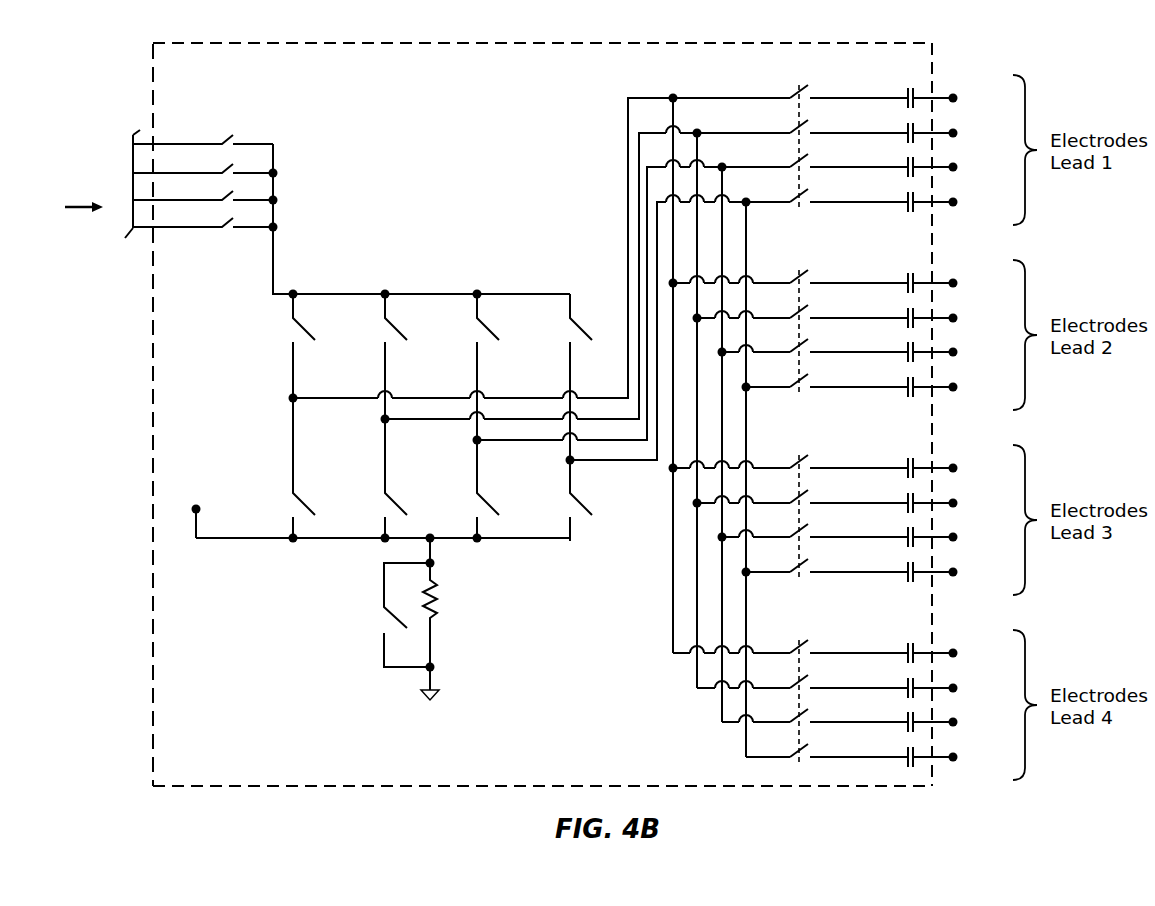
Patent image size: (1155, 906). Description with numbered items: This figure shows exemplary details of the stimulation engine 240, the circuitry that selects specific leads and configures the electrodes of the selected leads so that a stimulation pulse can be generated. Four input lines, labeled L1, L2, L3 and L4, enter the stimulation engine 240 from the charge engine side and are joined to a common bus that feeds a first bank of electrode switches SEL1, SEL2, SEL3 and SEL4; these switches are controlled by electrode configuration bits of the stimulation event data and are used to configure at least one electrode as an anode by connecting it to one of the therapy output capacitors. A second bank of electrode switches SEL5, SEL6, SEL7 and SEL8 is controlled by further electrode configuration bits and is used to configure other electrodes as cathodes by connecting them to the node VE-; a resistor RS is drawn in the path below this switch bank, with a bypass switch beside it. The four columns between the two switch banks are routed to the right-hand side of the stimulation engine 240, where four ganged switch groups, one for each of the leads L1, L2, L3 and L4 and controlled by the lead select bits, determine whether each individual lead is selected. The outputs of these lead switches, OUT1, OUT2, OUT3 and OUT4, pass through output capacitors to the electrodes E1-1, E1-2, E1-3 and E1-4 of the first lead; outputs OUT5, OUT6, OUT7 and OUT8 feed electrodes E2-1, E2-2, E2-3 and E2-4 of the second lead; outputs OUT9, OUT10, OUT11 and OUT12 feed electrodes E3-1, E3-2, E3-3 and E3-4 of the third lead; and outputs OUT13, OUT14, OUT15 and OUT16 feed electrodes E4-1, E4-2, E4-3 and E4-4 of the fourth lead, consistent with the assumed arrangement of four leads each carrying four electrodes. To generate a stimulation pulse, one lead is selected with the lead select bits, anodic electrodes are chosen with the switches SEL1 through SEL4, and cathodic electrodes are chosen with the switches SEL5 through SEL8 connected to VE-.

The stimulation engine 240 is at (499, 414).
The sense resistor RS is at (447, 614).
The VE- node VE- is at (193, 510).
The lead L1 is at (471, 131).
The lead L2 is at (471, 273).
The lead L3 is at (471, 379).
The lead L4 is at (471, 485).
The electrode switch SEL1 is at (276, 330).
The electrode switch SEL2 is at (368, 330).
The electrode switch SEL3 is at (461, 330).
The electrode switch SEL4 is at (553, 330).
The electrode switch SEL5 is at (276, 505).
The electrode switch SEL6 is at (368, 505).
The electrode switch SEL7 is at (461, 505).
The electrode switch SEL8 is at (553, 505).
The output 1 OUT1 is at (871, 92).
The output 2 OUT2 is at (871, 127).
The output 3 OUT3 is at (871, 161).
The output 4 OUT4 is at (871, 196).
The output 5 OUT5 is at (871, 277).
The output 6 OUT6 is at (871, 312).
The output 7 OUT7 is at (871, 346).
The output 8 OUT8 is at (871, 381).
The output 9 OUT9 is at (871, 462).
The output 10 OUT10 is at (871, 497).
The output 11 OUT11 is at (871, 531).
The output 12 OUT12 is at (871, 566).
The output 13 OUT13 is at (871, 647).
The output 14 OUT14 is at (871, 682).
The output 15 OUT15 is at (871, 716).
The output 16 OUT16 is at (871, 751).
The electrode 1 of lead 1 E1-1 is at (977, 98).
The electrode 2 of lead 1 E1-2 is at (977, 133).
The electrode 3 of lead 1 E1-3 is at (977, 167).
The electrode 4 of lead 1 E1-4 is at (977, 202).
The electrode 1 of lead 2 E2-1 is at (977, 283).
The electrode 2 of lead 2 E2-2 is at (977, 318).
The electrode 3 of lead 2 E2-3 is at (977, 352).
The electrode 4 of lead 2 E2-4 is at (977, 387).
The electrode 1 of lead 3 E3-1 is at (977, 468).
The electrode 2 of lead 3 E3-2 is at (977, 503).
The electrode 3 of lead 3 E3-3 is at (977, 537).
The electrode 4 of lead 3 E3-4 is at (977, 572).
The electrode 1 of lead 4 E4-1 is at (977, 653).
The electrode 2 of lead 4 E4-2 is at (977, 688).
The electrode 3 of lead 4 E4-3 is at (977, 722).
The electrode 4 of lead 4 E4-4 is at (977, 757).